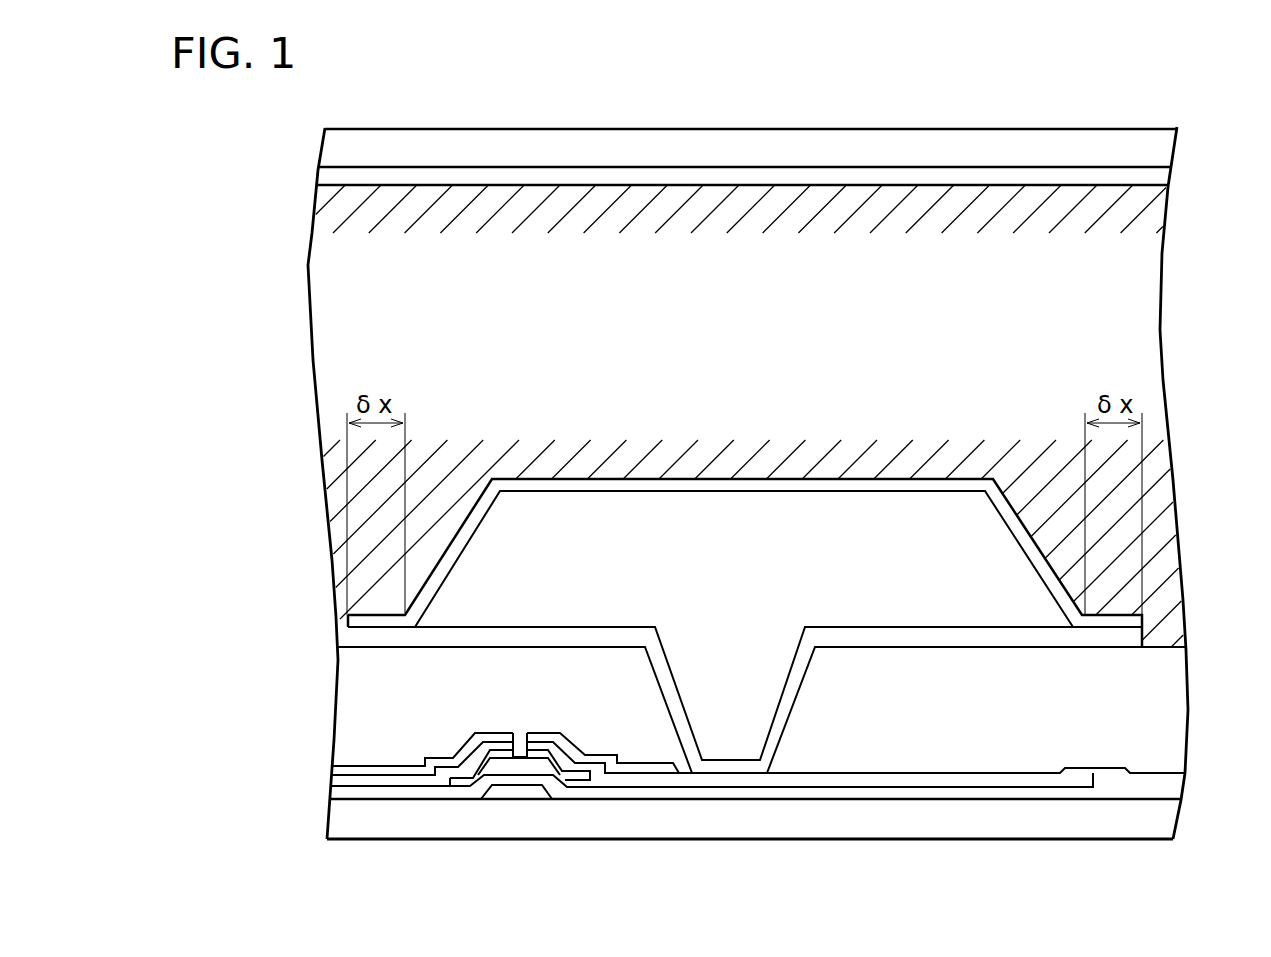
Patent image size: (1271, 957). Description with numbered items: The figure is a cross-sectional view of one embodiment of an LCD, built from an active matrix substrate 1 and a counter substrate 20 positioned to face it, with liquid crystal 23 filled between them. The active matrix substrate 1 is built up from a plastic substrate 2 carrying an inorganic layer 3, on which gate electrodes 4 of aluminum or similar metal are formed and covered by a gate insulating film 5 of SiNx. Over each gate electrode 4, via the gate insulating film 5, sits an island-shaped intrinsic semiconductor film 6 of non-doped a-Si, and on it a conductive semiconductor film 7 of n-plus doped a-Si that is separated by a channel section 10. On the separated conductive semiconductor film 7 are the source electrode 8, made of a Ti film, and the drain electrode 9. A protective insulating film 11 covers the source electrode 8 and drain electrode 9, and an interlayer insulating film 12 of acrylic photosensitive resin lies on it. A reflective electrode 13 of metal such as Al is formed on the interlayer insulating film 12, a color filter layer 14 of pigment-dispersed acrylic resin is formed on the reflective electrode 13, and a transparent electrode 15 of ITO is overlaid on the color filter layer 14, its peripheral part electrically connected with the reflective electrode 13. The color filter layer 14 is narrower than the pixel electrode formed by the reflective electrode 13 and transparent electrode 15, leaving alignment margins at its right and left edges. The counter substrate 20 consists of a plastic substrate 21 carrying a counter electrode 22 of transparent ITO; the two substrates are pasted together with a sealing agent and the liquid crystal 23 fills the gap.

The active matrix substrate 1 is at (248, 483).
The plastic substrate 2 is at (427, 826).
The inorganic layer 3 is at (335, 803).
The gate electrode 4 is at (517, 795).
The gate insulating film 5 is at (350, 783).
The intrinsic semiconductor film 6 is at (573, 780).
The conductive semiconductor film 7 is at (470, 780).
The source electrode 8 is at (477, 752).
The drain electrode 9 is at (532, 745).
The channel section 10 is at (517, 742).
The protective insulating film 11 is at (1166, 778).
The interlayer insulating film 12 is at (1150, 704).
The reflective electrode 13 is at (1122, 636).
The color filter layer 14 is at (830, 512).
The transparent electrode 15 is at (905, 483).
The counter substrate 20 is at (754, 175).
The plastic substrate 21 is at (1158, 146).
The counter electrode 22 is at (1158, 173).
The liquid crystal 23 is at (754, 366).